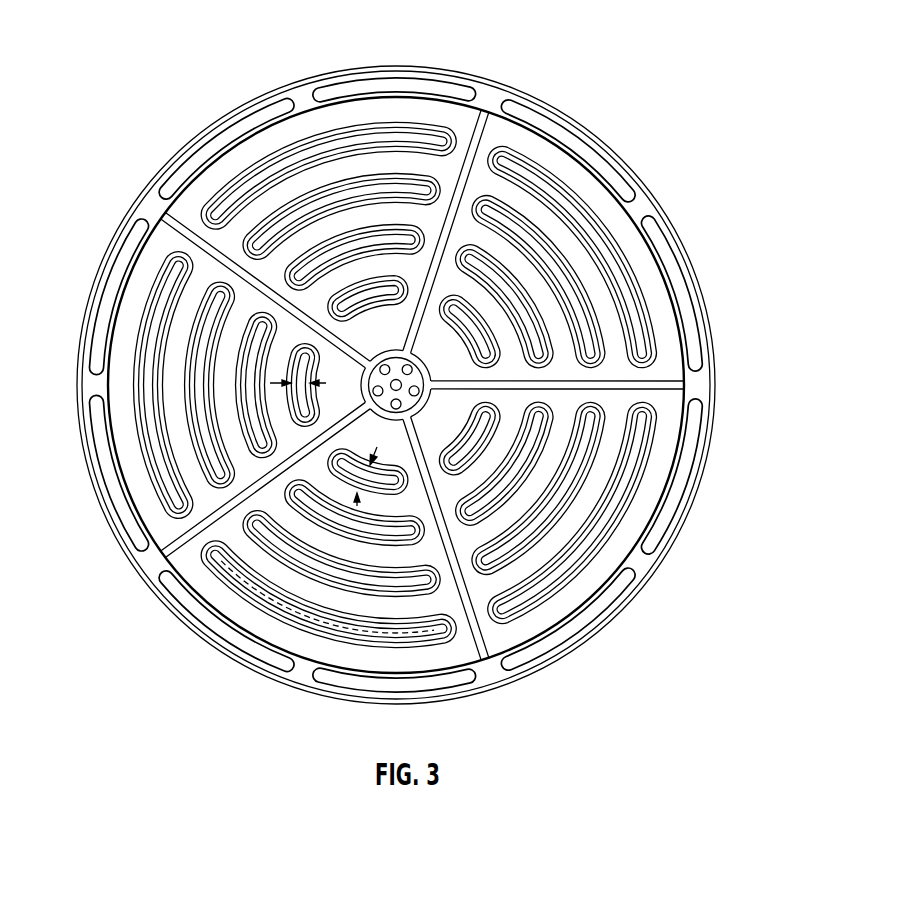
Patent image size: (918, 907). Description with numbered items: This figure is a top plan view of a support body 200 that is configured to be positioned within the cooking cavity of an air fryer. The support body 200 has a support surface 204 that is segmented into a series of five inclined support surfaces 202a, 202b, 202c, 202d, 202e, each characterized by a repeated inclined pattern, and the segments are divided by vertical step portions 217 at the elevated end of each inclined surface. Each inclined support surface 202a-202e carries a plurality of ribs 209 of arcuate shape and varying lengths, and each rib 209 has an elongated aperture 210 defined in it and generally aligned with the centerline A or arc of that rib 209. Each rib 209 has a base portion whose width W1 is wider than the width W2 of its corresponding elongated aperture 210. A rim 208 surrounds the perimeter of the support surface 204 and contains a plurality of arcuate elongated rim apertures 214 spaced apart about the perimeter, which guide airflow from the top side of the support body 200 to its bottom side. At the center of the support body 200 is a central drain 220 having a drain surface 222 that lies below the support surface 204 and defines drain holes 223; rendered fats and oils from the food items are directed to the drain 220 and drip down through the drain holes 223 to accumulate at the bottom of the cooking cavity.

The support body 200 is at (709, 121).
The inclined support surface 202a is at (163, 253).
The inclined support surface 202b is at (318, 130).
The inclined support surface 202c is at (660, 318).
The inclined support surface 202d is at (568, 603).
The inclined support surface 202e is at (207, 582).
The support surface 204 is at (613, 240).
The rim 208 is at (688, 381).
The rib 209 is at (147, 463).
The elongated aperture 210 is at (150, 353).
The elongated rim aperture 214 is at (635, 572).
The annular rim 217 is at (686, 398).
The central drain 220 is at (420, 358).
The drain surface 222 is at (413, 380).
The drain holes 223 is at (375, 370).
The centerline A is at (212, 535).
The width of base portion W1 is at (373, 464).
The width of elongated aperture W2 is at (313, 386).